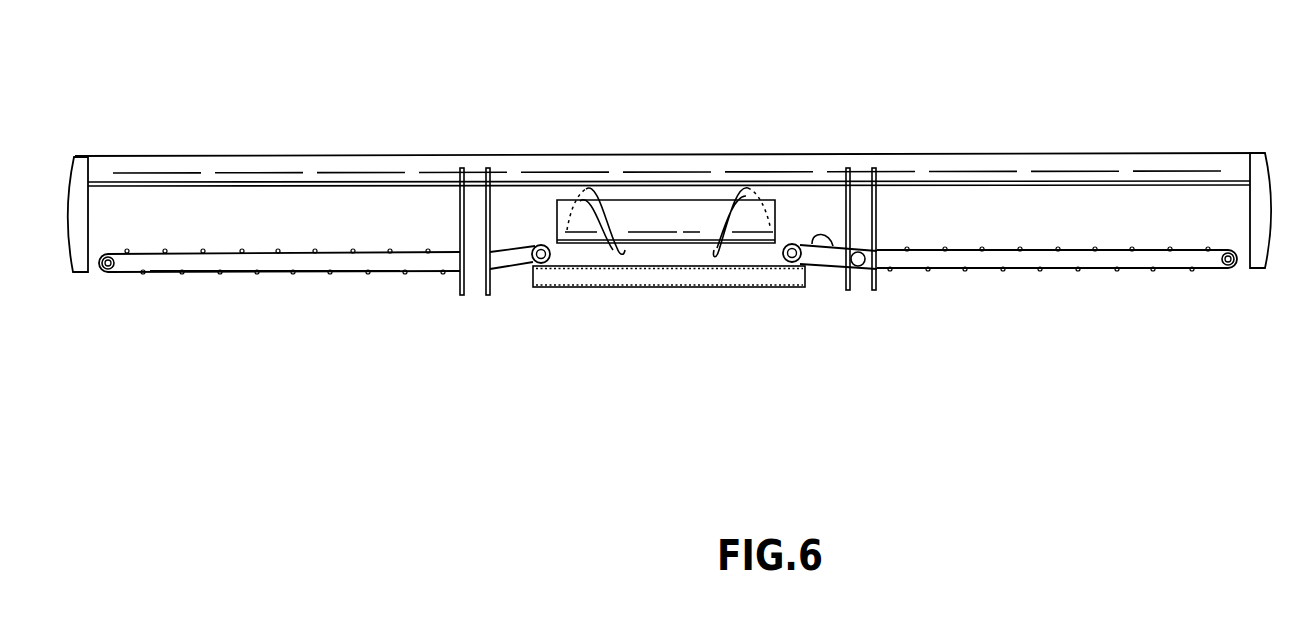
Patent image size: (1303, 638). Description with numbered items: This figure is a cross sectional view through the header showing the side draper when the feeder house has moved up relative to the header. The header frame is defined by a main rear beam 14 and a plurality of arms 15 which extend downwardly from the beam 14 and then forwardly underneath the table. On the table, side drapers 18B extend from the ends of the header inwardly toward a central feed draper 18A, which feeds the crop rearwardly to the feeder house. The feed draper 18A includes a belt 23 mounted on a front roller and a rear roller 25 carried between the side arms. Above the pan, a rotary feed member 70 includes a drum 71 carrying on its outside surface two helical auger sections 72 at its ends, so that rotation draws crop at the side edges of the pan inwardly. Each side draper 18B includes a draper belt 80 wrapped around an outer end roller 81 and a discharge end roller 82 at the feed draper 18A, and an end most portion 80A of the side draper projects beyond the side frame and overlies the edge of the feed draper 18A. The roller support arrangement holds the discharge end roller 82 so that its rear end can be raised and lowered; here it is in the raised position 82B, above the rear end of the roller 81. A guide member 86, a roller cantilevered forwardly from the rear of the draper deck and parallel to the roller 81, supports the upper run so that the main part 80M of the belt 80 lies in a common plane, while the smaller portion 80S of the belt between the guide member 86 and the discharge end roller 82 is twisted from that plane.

The main rear beam 14 is at (340, 172).
The arms 15 is at (458, 222).
The draper belt 80 is at (328, 252).
The main part of the belt 80M is at (1105, 249).
The end most portion of the side draper 80A is at (542, 218).
The smaller portion of the draper belt 80S is at (833, 246).
The outer end roller 81 is at (110, 270).
The discharge end roller 82 is at (537, 263).
The raised position of discharge end roller 82B is at (803, 208).
The guide member 86 is at (861, 265).
The rotary feed member 70 is at (650, 200).
The drum 71 is at (682, 208).
The helical auger sections 72 is at (750, 183).
The belt 23 is at (602, 272).
The rear roller 25 is at (678, 272).
The feed draper 18A is at (733, 280).
The side drapers 18B is at (268, 292).